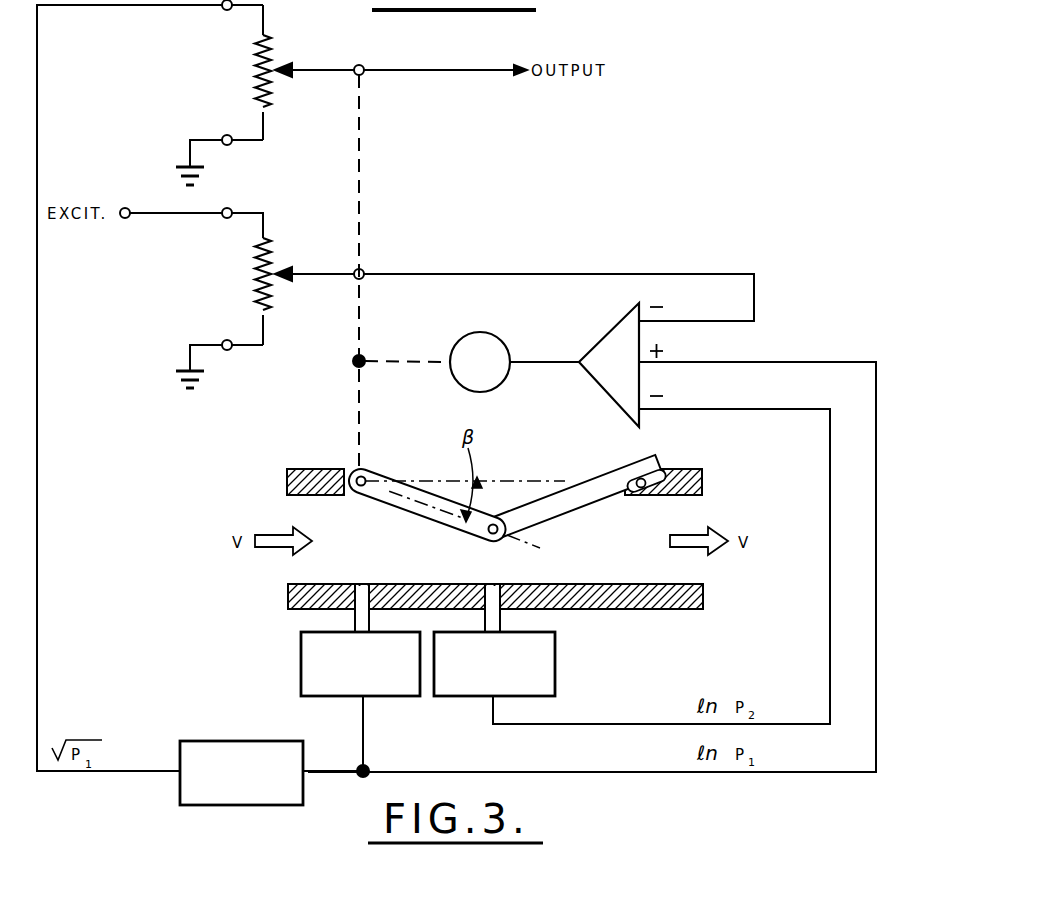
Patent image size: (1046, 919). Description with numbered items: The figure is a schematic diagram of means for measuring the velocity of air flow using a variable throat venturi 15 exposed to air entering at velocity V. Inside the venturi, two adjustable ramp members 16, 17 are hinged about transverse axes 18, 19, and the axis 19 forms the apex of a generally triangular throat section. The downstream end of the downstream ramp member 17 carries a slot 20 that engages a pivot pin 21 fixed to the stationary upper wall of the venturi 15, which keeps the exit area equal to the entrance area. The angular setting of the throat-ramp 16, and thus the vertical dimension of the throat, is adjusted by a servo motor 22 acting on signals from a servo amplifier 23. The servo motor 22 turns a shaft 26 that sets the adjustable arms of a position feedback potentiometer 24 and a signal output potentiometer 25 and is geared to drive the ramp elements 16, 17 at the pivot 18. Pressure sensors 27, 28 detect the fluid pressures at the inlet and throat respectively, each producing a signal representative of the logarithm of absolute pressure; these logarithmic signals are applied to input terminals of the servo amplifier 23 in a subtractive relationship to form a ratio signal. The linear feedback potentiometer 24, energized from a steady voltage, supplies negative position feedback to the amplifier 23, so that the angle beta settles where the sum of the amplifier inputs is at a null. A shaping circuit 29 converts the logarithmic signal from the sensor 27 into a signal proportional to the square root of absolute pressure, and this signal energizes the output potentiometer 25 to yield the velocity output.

The variable throat venturi 15 is at (288, 592).
The adjustable ramp member 16 is at (378, 500).
The adjustable ramp member 17 is at (604, 478).
The transverse axis 18 is at (370, 474).
The transverse axis 19 is at (490, 540).
The slot 20 is at (630, 490).
The pivot pin 21 is at (668, 470).
The servo motor 22 is at (490, 333).
The servo amplifier 23 is at (624, 322).
The position feedback potentiometer 24 is at (270, 240).
The signal output potentiometer 25 is at (270, 46).
The shaft 26 is at (364, 330).
The pressure sensor 27 is at (301, 655).
The pressure sensor 28 is at (555, 668).
The shaping circuit 29 is at (180, 757).